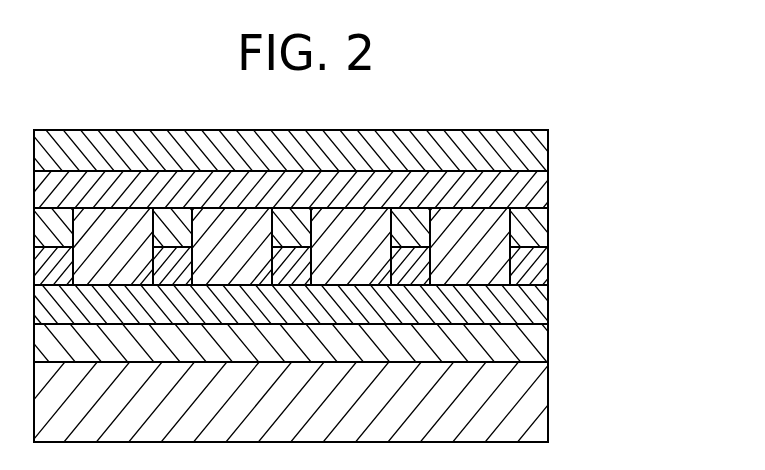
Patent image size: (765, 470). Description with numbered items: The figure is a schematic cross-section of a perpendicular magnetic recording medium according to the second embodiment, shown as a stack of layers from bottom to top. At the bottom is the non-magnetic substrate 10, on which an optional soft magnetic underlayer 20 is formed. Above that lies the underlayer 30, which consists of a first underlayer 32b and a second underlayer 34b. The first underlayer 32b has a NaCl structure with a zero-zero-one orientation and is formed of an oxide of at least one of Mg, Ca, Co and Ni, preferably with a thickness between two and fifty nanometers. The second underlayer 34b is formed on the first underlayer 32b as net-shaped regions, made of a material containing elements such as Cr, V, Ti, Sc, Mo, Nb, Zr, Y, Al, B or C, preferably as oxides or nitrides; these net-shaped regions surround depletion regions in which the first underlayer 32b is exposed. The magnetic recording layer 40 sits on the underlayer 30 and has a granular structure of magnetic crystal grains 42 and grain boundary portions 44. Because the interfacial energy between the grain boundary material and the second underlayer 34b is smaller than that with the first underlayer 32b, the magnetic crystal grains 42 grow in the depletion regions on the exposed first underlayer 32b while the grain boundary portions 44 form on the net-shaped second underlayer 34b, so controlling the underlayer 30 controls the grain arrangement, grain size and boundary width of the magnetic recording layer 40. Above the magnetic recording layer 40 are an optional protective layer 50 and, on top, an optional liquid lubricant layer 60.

The non-magnetic substrate 10 is at (522, 392).
The soft magnetic underlayer 20 is at (522, 352).
The underlayer 30 is at (369, 288).
The first underlayer 32b is at (522, 308).
The second underlayer 34b is at (520, 272).
The magnetic recording layer 40 is at (363, 242).
The magnetic crystal grains 42 is at (485, 243).
The grain boundary portions 44 is at (523, 222).
The protective layer 50 is at (522, 187).
The liquid lubricant layer 60 is at (523, 142).